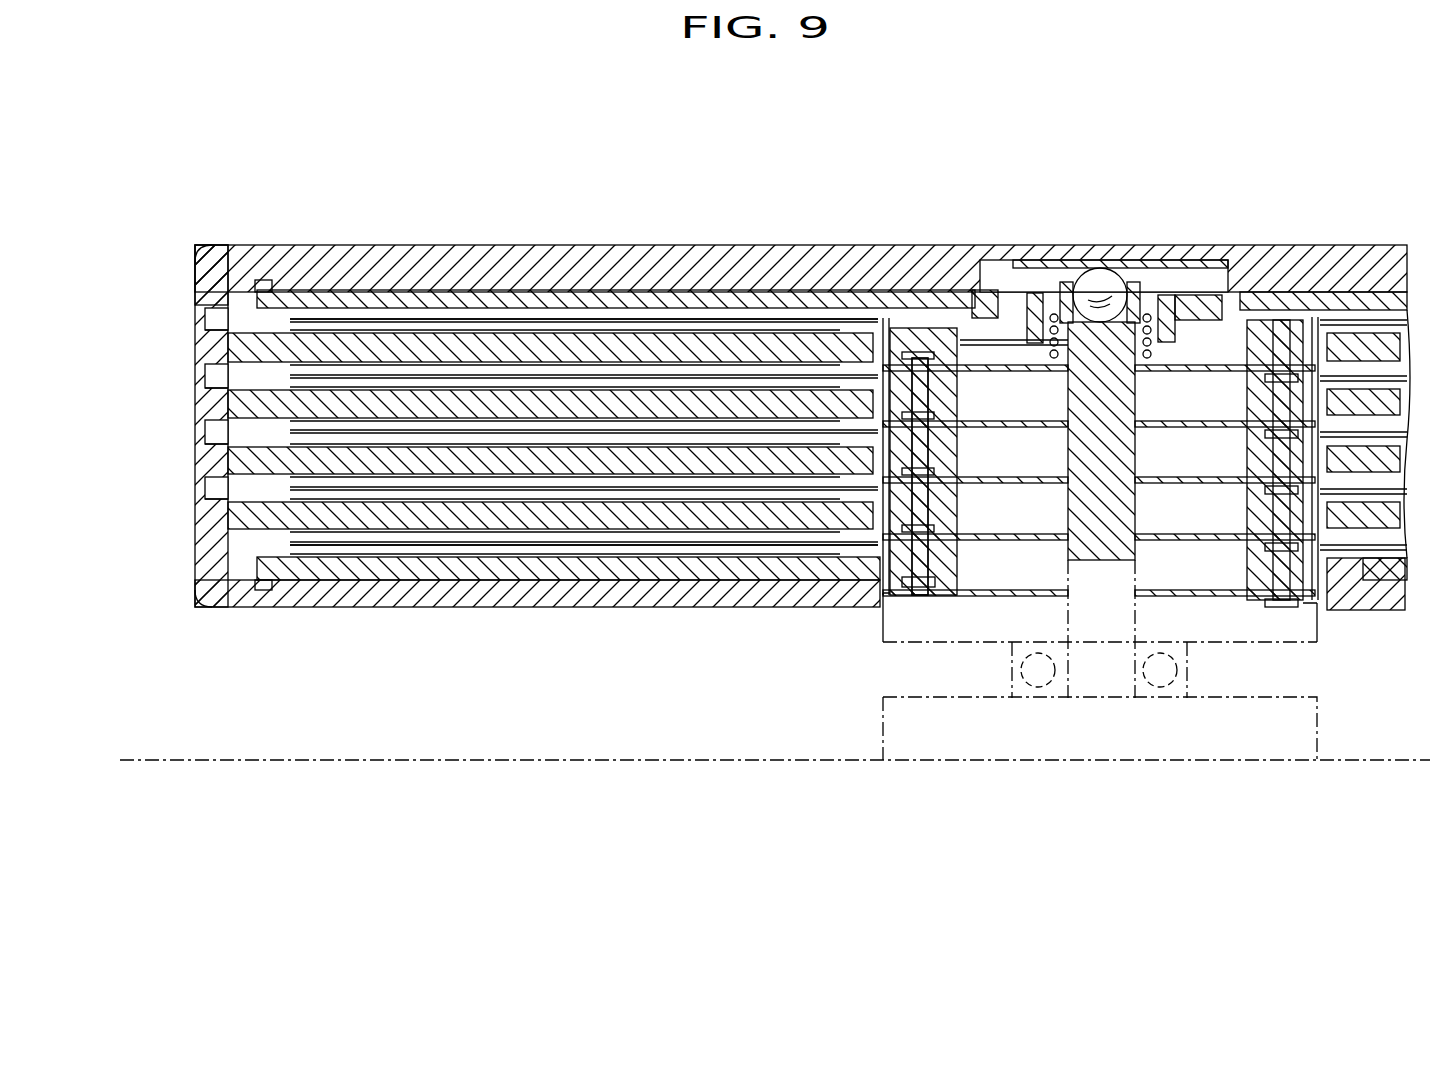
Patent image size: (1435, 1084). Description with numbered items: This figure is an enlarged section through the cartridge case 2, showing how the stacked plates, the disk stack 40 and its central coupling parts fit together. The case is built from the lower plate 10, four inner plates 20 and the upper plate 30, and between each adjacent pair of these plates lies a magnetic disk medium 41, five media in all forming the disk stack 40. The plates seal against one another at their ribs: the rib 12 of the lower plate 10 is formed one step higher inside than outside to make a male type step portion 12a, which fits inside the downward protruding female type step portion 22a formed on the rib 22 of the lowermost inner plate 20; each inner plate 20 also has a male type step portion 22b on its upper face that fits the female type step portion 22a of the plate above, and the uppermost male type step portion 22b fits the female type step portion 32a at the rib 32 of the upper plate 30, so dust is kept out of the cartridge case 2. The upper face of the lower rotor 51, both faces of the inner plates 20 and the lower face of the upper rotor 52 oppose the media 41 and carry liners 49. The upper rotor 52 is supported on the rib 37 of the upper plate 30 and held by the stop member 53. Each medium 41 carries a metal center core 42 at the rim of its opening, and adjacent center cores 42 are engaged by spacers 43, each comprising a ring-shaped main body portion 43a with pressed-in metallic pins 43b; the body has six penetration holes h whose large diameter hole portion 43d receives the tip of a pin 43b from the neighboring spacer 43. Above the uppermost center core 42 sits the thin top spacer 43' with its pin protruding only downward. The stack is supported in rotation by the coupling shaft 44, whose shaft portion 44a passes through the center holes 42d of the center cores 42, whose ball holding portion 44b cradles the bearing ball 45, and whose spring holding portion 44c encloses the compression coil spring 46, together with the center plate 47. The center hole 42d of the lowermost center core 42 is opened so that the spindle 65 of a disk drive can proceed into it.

The cartridge case 2 is at (1030, 140).
The lower plate 10 is at (794, 612).
The rib 12 is at (476, 584).
The male type step portion 12a is at (252, 588).
The inner plate 20 is at (540, 400).
The rib 22 is at (153, 424).
The female type step portion 22a is at (212, 503).
The male type step portion 22b is at (212, 480).
The upper plate 30 is at (812, 245).
The rib 32 is at (175, 272).
The female type step portion 32a is at (255, 283).
The rib 37 is at (968, 290).
The disk stack 40 is at (558, 486).
The magnetic disk medium 41 is at (272, 540).
The center core 42 is at (1262, 320).
The center hole 42d is at (1142, 553).
The spacer 43 is at (964, 442).
The top spacer 43' is at (1011, 350).
The main body portion 43a is at (955, 548).
The pin 43b is at (955, 581).
The large diameter hole portion 43d is at (923, 358).
The penetration hole h is at (920, 476).
The coupling shaft 44 is at (1138, 320).
The shaft portion 44a is at (1098, 560).
The ball holding portion 44b is at (1054, 313).
The spring holding portion 44c is at (1002, 293).
The bearing ball 45 is at (1102, 270).
The compression coil spring 46 is at (1166, 295).
The center plate 47 is at (1213, 365).
The liner 49 is at (380, 554).
The lower rotor 51 is at (617, 582).
The upper rotor 52 is at (606, 291).
The stop member 53 is at (1310, 292).
The spindle 65 is at (1322, 672).